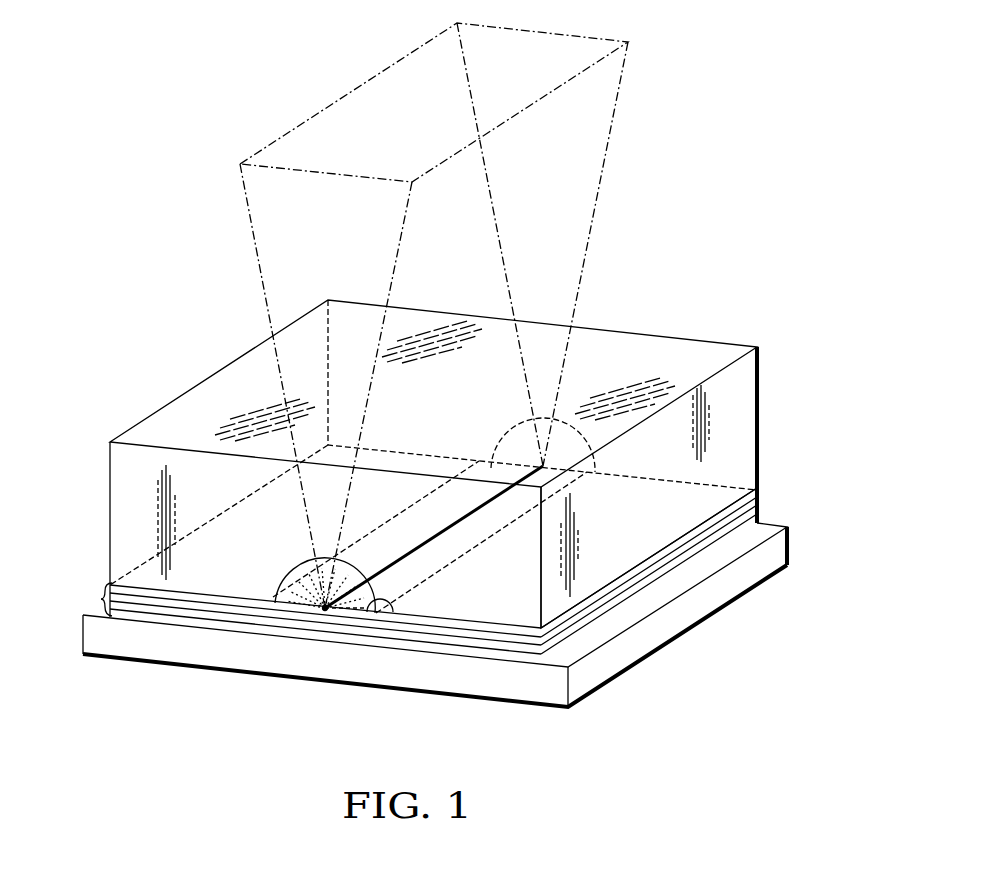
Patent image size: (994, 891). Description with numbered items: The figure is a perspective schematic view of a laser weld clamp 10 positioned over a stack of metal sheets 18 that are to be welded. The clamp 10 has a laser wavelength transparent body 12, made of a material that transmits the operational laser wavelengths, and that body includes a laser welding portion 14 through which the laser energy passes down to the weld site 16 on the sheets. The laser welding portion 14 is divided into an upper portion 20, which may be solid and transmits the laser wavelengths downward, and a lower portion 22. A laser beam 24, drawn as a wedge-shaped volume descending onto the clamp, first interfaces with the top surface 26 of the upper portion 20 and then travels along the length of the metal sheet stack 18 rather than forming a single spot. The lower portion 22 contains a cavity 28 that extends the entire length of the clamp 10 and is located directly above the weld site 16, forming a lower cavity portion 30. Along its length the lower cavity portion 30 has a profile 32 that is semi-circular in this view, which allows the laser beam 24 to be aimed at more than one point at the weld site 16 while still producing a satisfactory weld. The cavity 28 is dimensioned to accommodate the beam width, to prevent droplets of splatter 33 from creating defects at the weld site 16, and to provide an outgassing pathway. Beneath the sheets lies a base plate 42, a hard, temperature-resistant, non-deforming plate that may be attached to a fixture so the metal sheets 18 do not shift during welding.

The laser weld clamp 10 is at (178, 295).
The laser wavelength transparent body 12 is at (120, 472).
The laser welding portion 14 is at (120, 522).
The weld site 16 is at (329, 614).
The metal sheets 18 is at (100, 599).
The upper portion 20 is at (720, 420).
The lower portion 22 is at (488, 598).
The laser beam 24 is at (592, 230).
The top surface 26 is at (630, 360).
The cavity 28 is at (300, 569).
The lower cavity portion 30 is at (393, 603).
The profile 32 is at (457, 522).
The droplets of splatter 33 is at (317, 597).
The base plate 42 is at (683, 608).